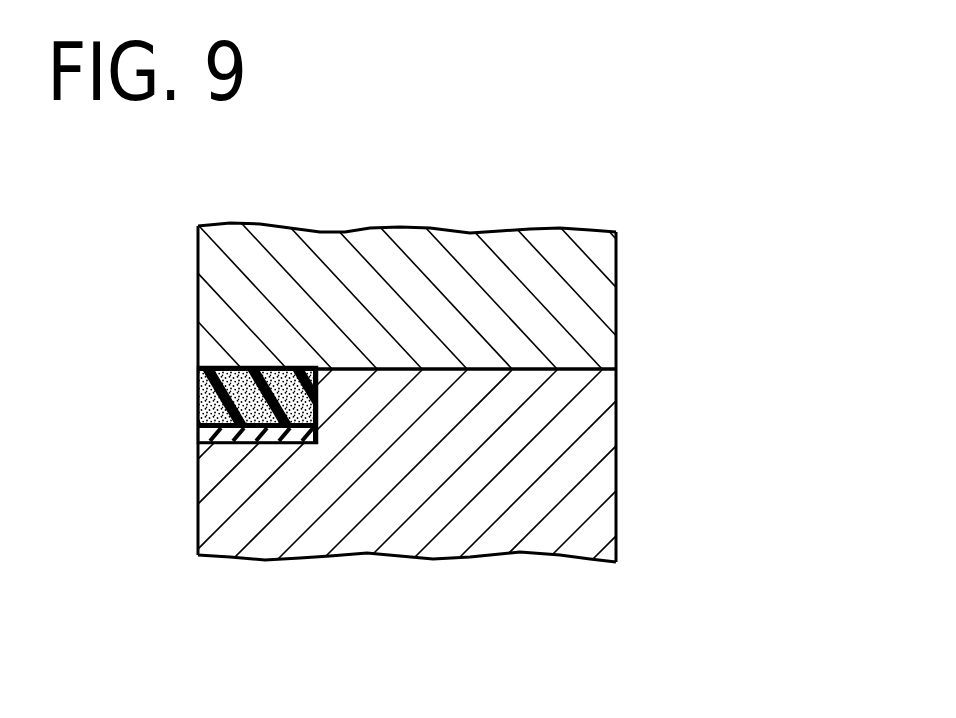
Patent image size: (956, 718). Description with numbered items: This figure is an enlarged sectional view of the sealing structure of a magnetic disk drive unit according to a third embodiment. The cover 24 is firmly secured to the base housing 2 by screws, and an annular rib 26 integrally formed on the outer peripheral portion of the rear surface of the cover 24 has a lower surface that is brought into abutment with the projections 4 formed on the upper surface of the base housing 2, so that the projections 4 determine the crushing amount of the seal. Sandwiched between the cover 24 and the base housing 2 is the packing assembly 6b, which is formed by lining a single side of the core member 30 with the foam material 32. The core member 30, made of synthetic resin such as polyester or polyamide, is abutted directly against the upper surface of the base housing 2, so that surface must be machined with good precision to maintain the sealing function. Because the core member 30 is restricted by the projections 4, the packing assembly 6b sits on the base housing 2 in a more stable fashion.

The base housing 2 is at (383, 560).
The projections 4 is at (455, 547).
The packing assembly 6b is at (193, 405).
The cover 24 is at (403, 225).
The annular rib 26 is at (485, 247).
The core member 30 is at (197, 433).
The foam material 32 is at (197, 380).